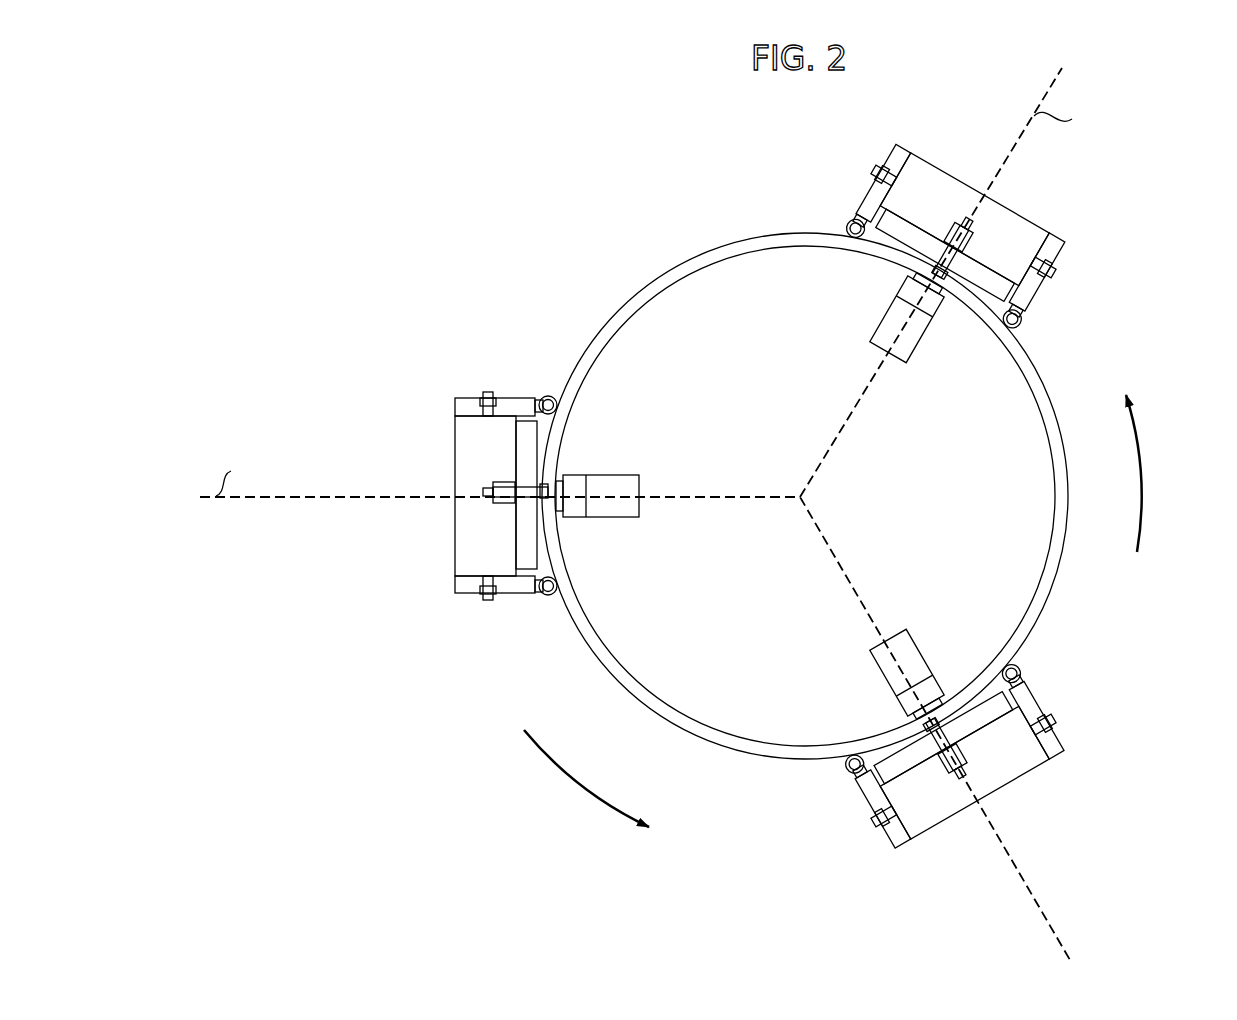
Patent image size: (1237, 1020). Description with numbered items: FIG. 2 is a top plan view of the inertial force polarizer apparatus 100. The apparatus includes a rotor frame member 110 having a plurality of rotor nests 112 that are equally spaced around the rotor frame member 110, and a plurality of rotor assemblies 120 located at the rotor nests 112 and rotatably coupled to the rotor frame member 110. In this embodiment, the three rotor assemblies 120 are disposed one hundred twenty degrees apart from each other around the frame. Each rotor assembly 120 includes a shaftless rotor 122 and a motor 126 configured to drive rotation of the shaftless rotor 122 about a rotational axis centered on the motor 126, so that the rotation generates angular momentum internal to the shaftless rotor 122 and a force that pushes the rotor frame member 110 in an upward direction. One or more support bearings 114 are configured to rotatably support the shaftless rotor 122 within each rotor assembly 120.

The inertial force polarizer apparatus 100 is at (316, 166).
The rotor frame member 110 is at (652, 272).
The rotor nest 112 is at (952, 270).
The support bearing 114 is at (880, 172).
The rotor assembly 120 is at (1083, 220).
The shaftless rotor 122 is at (915, 152).
The motor 126 is at (912, 368).